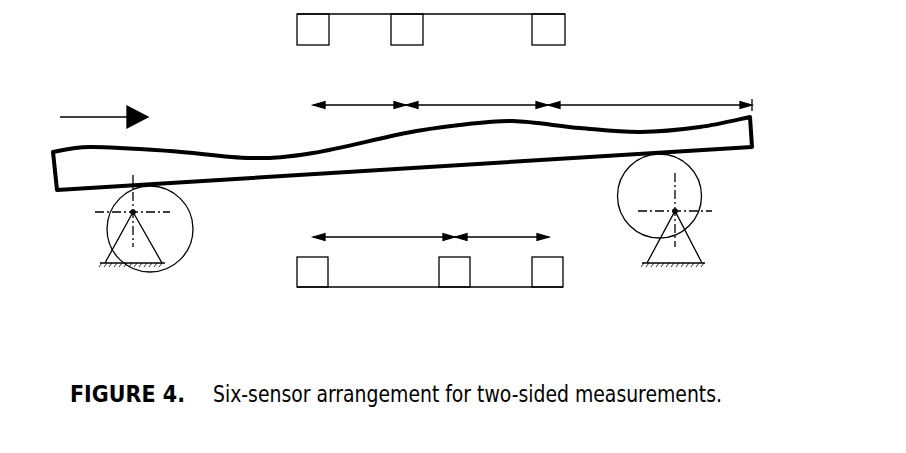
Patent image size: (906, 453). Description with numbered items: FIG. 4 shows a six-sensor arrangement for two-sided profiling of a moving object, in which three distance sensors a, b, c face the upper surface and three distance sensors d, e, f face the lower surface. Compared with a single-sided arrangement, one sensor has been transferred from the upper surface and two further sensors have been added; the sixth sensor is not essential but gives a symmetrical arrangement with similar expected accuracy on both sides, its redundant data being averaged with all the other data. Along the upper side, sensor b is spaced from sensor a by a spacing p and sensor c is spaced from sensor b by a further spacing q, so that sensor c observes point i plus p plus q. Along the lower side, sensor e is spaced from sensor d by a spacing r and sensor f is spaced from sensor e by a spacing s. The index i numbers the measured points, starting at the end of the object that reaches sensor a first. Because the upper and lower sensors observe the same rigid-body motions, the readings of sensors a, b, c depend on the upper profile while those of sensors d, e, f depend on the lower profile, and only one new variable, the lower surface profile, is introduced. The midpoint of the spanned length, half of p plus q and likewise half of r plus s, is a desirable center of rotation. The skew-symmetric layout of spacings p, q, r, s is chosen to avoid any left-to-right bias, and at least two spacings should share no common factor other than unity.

The upper distance sensor a is at (548, 125).
The upper distance sensor b is at (406, 133).
The upper distance sensor c is at (313, 257).
The lower distance sensor d is at (549, 160).
The lower distance sensor e is at (455, 167).
The lower distance sensor f is at (312, 272).
The sensor spacing q is at (359, 96).
The sensor spacing p is at (477, 96).
The measurement point index i is at (650, 97).
The sensor spacing s is at (384, 228).
The sensor spacing r is at (502, 227).